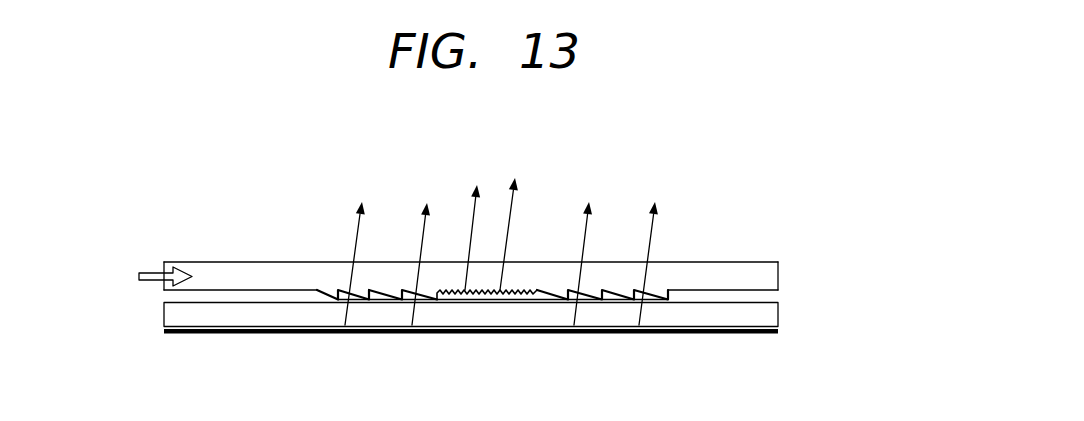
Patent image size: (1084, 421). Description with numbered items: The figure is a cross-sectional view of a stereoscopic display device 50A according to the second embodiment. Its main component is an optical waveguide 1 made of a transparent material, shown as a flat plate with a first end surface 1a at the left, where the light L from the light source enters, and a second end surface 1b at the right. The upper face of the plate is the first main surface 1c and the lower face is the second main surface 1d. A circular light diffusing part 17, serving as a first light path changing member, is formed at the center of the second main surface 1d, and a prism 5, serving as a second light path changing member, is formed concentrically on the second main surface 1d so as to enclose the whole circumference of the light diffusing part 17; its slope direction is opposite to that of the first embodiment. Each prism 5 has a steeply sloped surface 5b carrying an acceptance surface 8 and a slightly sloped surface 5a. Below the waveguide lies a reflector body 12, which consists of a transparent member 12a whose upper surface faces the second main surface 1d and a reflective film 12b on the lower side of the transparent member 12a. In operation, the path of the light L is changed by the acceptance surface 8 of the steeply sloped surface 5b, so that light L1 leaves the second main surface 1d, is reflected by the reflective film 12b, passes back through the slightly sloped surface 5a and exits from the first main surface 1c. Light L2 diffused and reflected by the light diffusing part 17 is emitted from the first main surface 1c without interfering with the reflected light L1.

The stereoscopic display device 50A is at (718, 151).
The optical waveguide 1 is at (782, 254).
The first end surface 1a is at (164, 287).
The second end surface 1b is at (779, 268).
The first main surface 1c is at (233, 261).
The second main surface 1d is at (242, 292).
The prism 5 is at (318, 312).
The slightly sloped surface 5a is at (352, 303).
The steeply sloped surface 5b is at (613, 303).
The acceptance surface 8 is at (395, 303).
The light diffusing part 17 is at (486, 295).
The reflector body 12 is at (886, 290).
The transparent member 12a is at (768, 308).
The reflective film 12b is at (779, 332).
The light L is at (151, 270).
The light L1 is at (357, 236).
The light L2 is at (513, 216).